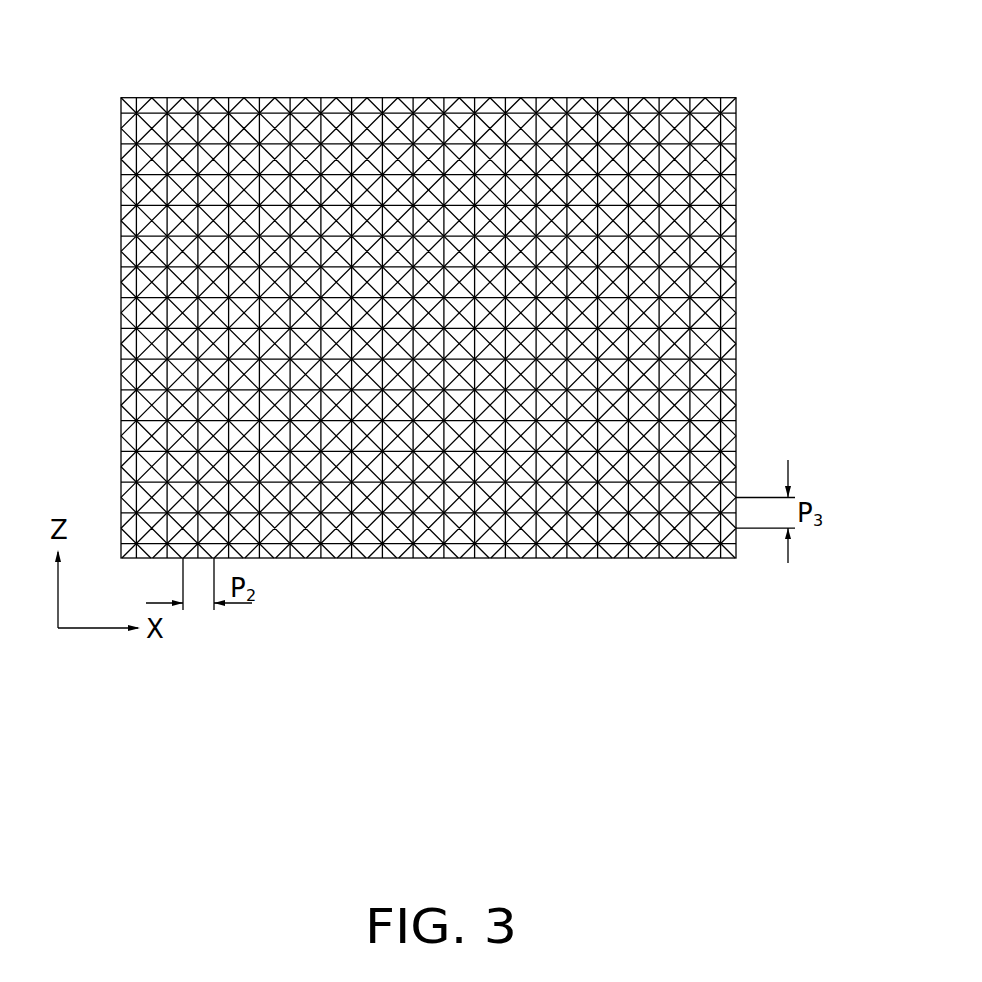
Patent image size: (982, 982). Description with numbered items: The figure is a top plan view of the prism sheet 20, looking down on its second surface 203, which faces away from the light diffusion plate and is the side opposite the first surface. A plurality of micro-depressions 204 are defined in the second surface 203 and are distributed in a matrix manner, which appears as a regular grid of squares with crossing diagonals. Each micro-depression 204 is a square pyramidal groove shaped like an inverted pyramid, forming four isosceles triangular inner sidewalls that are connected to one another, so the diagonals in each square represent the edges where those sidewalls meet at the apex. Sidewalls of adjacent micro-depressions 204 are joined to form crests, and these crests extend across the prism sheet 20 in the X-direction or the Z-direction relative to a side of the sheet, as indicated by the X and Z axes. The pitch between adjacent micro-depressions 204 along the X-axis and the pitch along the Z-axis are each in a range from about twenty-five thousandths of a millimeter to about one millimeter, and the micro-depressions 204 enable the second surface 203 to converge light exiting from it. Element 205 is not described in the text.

The prism sheet 20 is at (689, 78).
The first grid lines 205 is at (297, 107).
The micro-depressions 204 is at (736, 244).
The second surface 203 is at (742, 296).